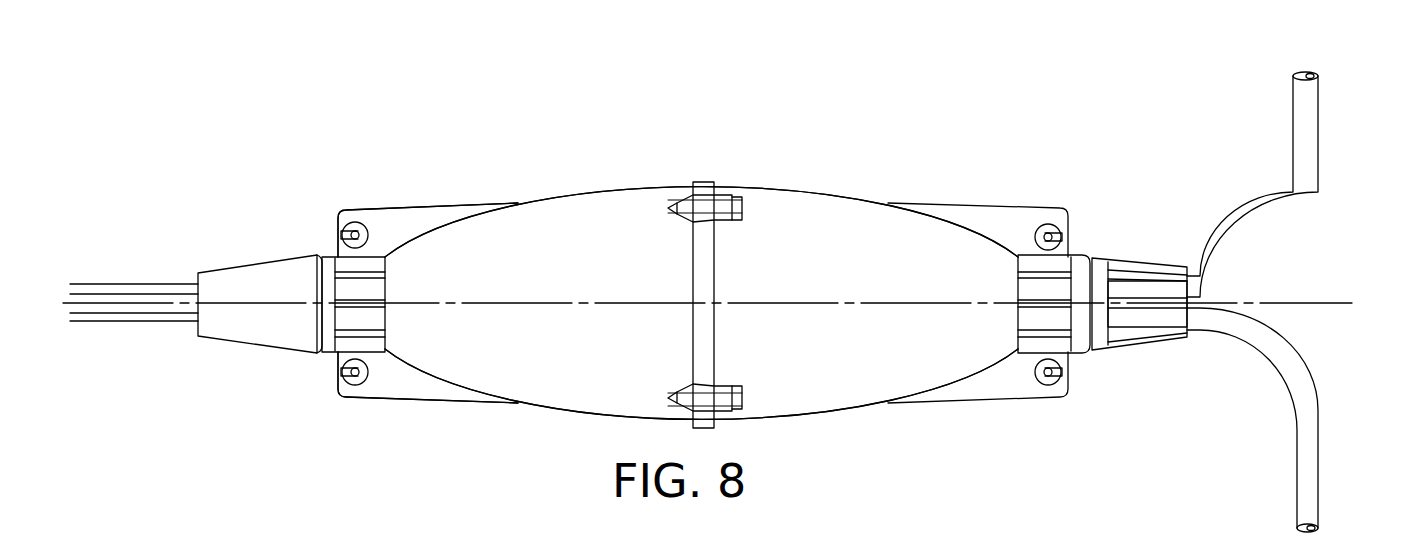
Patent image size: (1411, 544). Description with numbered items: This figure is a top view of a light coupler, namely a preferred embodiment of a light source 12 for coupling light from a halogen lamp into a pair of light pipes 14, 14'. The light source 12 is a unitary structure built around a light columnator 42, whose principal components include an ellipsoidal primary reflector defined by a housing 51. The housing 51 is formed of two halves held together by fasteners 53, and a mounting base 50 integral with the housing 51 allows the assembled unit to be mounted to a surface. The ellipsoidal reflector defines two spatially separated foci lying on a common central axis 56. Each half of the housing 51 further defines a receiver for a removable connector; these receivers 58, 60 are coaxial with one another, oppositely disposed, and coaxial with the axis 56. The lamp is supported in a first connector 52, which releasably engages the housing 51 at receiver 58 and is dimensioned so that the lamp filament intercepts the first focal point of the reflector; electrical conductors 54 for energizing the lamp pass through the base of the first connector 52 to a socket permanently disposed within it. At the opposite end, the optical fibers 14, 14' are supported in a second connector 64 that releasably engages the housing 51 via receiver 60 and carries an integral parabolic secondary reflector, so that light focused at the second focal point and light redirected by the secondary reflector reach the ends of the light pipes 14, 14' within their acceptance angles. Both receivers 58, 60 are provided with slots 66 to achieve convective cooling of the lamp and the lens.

The light source 12 is at (855, 170).
The light pipe 14 is at (1295, 420).
The light pipe 14' is at (1297, 184).
The light columnator 42 is at (537, 267).
The mounting base 50 is at (997, 400).
The housing 51 is at (838, 414).
The first connector 52 is at (247, 343).
The fasteners 53 is at (742, 208).
The electrical conductors 54 is at (180, 312).
The central axis 56 is at (653, 302).
The receiver 58 is at (331, 353).
The receiver 60 is at (1078, 257).
The second connector 64 is at (1130, 260).
The slots 66 is at (372, 272).